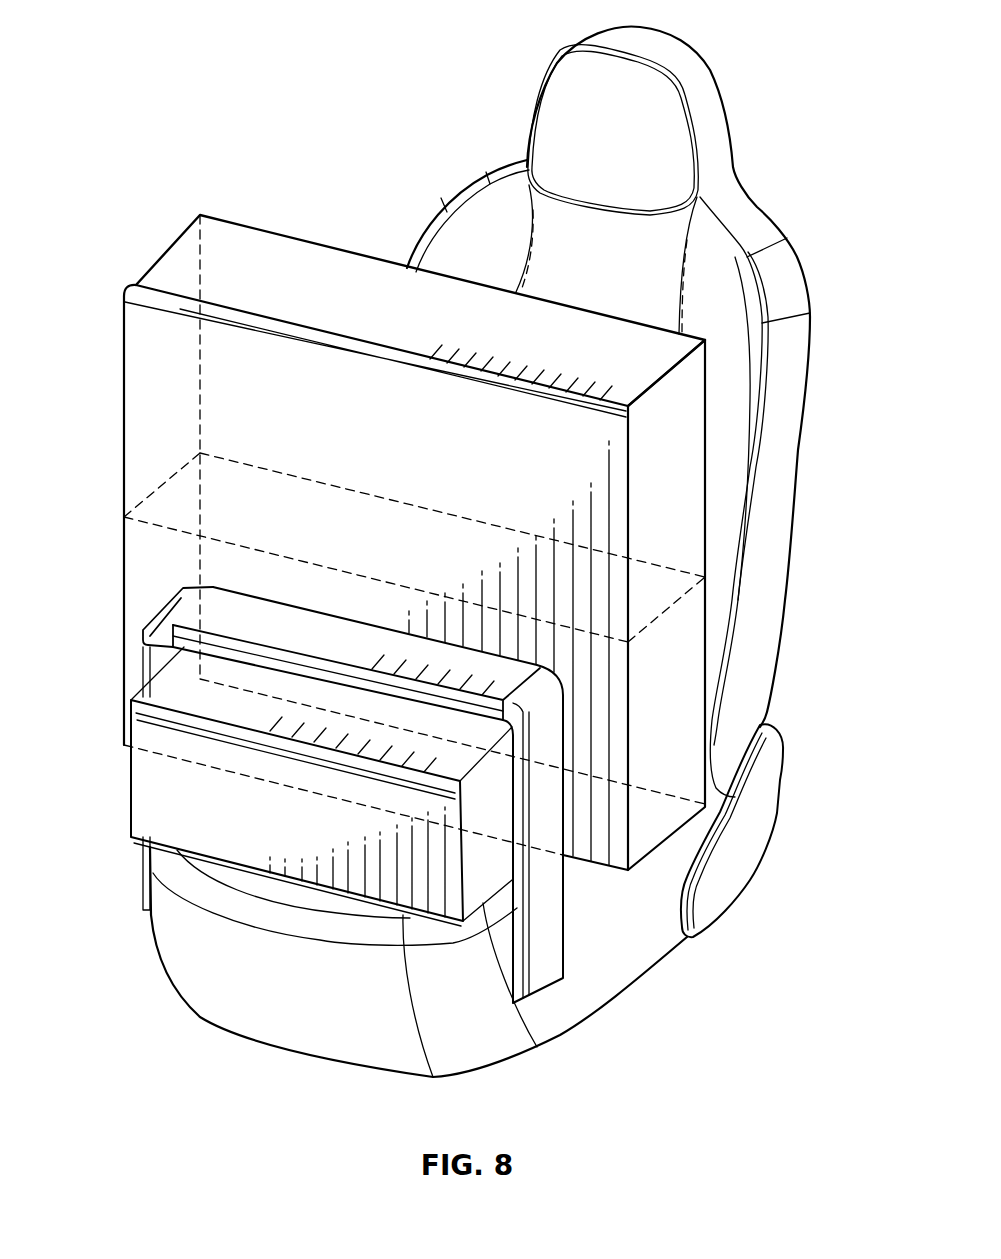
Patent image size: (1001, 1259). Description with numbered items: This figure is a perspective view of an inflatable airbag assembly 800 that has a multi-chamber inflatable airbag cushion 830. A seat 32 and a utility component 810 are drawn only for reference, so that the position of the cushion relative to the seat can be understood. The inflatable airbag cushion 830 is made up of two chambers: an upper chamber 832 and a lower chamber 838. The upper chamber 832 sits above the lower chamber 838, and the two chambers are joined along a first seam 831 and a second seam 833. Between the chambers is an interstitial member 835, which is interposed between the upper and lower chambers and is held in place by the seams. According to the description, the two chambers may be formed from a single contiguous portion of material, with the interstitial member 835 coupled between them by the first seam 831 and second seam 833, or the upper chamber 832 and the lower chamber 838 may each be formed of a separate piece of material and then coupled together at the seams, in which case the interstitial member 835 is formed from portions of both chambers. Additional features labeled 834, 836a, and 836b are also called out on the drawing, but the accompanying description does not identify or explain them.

The inflatable airbag assembly 800 is at (104, 61).
The seat 32 is at (793, 503).
The utility component 810 is at (160, 612).
The multi-chamber inflatable airbag cushion 830 is at (362, 516).
The first seam 831 is at (383, 582).
The upper chamber 832 is at (268, 458).
The second seam 833 is at (485, 522).
The front wall 834 is at (160, 433).
The interstitial member 835 is at (363, 517).
The top wall 836a is at (300, 258).
The bottom wall 836b is at (410, 870).
The lower chamber 838 is at (231, 830).